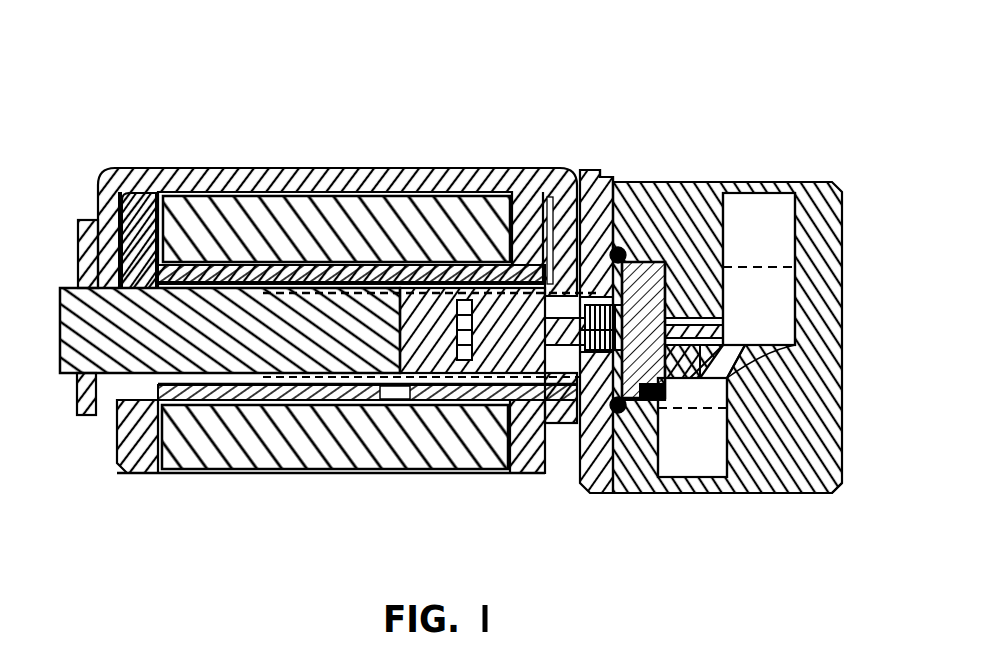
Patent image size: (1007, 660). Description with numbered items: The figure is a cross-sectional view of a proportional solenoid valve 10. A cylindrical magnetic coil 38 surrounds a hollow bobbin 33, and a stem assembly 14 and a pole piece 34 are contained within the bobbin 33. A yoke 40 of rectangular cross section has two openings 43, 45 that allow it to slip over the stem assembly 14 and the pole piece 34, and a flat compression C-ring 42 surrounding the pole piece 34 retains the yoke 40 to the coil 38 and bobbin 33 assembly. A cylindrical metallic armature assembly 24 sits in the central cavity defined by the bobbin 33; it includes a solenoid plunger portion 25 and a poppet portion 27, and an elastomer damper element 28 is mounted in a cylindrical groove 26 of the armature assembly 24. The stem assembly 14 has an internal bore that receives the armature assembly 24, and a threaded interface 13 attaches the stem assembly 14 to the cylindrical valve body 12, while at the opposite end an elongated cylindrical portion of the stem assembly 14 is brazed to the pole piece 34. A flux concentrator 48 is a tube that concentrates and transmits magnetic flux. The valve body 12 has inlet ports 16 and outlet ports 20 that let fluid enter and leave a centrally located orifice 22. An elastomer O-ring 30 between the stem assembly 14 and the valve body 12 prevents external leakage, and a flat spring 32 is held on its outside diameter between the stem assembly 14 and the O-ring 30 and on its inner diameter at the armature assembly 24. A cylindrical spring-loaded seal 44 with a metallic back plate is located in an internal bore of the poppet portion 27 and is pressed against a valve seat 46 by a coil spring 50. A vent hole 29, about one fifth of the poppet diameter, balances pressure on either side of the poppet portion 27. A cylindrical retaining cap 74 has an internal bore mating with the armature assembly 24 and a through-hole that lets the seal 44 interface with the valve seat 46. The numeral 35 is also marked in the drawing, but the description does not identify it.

The proportional solenoid valve 10 is at (587, 93).
The valve body 12 is at (842, 215).
The threaded interface 13 is at (590, 494).
The stem assembly 14 is at (596, 170).
The inlet ports 16 is at (838, 222).
The outlet ports 20 is at (713, 460).
The orifice 22 is at (824, 492).
The armature assembly 24 is at (578, 255).
The solenoid plunger portion 25 is at (500, 275).
The cylindrical groove 26 is at (470, 376).
The poppet portion 27 is at (655, 395).
The elastomer damper element 28 is at (457, 386).
The vent hole 29 is at (662, 270).
The O-ring 30 is at (622, 250).
The flat spring 32 is at (616, 415).
The bobbin 33 is at (142, 475).
The pole piece 34 is at (227, 360).
The bearing 35 is at (397, 386).
The magnetic coil 38 is at (197, 470).
The yoke 40 is at (300, 178).
The flat compression C-ring 42 is at (90, 218).
The opening 43 is at (77, 412).
The spring-loaded seal 44 is at (722, 350).
The opening 45 is at (568, 430).
The valve seat 46 is at (775, 228).
The flux concentrator 48 is at (455, 290).
The coil spring 50 is at (652, 300).
The retaining cap 74 is at (665, 400).